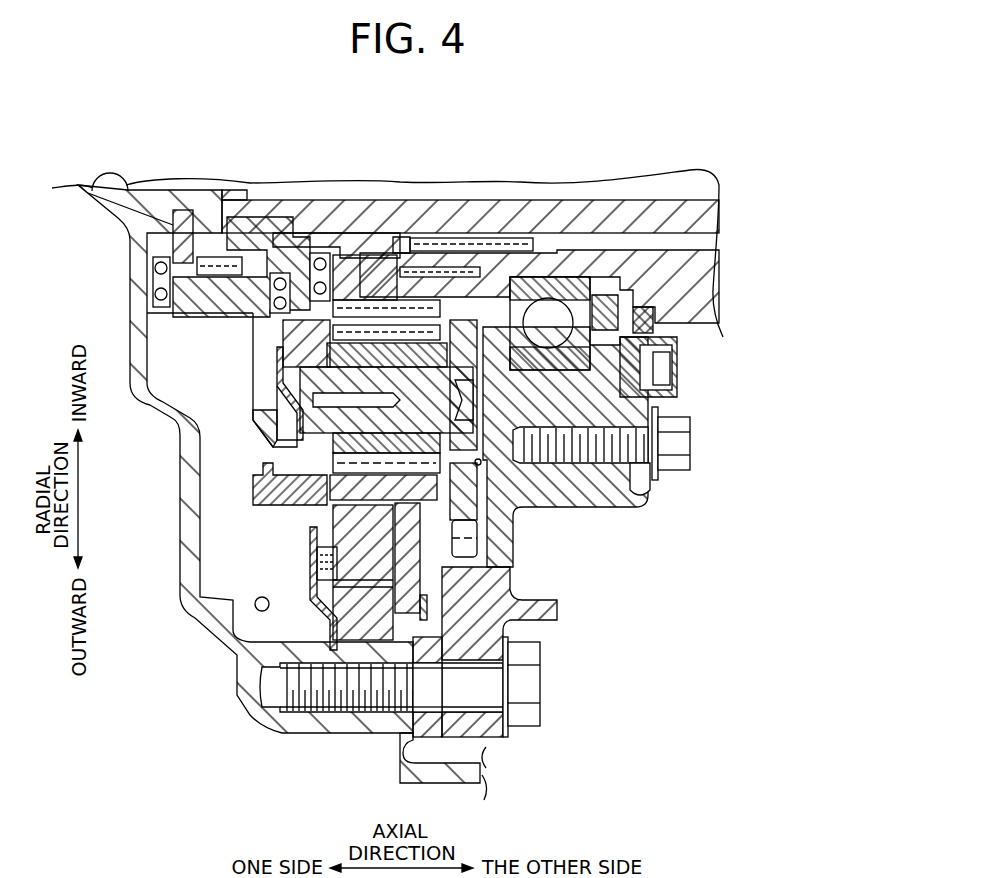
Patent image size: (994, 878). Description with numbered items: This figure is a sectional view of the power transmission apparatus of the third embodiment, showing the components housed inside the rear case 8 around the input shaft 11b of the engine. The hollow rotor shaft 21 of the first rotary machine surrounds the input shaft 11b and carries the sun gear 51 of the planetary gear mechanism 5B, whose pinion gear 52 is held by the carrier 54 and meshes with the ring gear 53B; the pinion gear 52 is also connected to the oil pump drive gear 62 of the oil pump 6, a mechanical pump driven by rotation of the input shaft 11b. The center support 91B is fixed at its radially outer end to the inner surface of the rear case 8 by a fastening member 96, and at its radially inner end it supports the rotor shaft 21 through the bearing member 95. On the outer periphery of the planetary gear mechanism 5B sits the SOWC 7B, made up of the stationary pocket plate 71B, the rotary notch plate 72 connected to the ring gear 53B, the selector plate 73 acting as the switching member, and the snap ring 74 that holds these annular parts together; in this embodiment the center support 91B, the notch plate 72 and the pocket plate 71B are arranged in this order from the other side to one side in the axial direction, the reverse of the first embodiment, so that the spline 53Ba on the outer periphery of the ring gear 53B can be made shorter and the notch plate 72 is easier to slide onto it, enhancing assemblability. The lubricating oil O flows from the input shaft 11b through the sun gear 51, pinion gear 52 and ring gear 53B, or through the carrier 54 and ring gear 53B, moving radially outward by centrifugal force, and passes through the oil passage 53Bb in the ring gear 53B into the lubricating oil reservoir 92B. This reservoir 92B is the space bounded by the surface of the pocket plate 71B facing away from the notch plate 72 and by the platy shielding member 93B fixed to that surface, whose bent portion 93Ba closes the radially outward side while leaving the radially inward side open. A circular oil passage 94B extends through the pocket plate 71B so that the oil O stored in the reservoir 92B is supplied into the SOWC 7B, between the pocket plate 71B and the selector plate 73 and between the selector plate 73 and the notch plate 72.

The rear case 8 is at (180, 548).
The input shaft 11b is at (700, 220).
The rotor shaft 21 is at (700, 290).
The sun gear 51 is at (380, 265).
The bearing member 95 is at (563, 283).
The oil pump 6 is at (482, 463).
The carrier 54 is at (320, 337).
The planetary gear mechanism 5B is at (286, 408).
The pinion gear 52 is at (353, 450).
The ring gear 53B is at (263, 480).
The oil passage 53Bb is at (313, 493).
The spline 53Ba is at (300, 507).
The SOWC 7B is at (433, 545).
The oil pump drive gear 62 is at (488, 470).
The notch plate 72 is at (482, 570).
The shielding member 93B is at (305, 568).
The lubricating oil reservoir 92B is at (303, 555).
The lubricating oil O is at (315, 597).
The bent portion 93Ba is at (310, 603).
The oil passage 94B is at (333, 615).
The pocket plate 71B is at (332, 703).
The selector plate 73 is at (368, 720).
The snap ring 74 is at (408, 768).
The fastening member 96 is at (543, 690).
The center support 91B is at (560, 635).